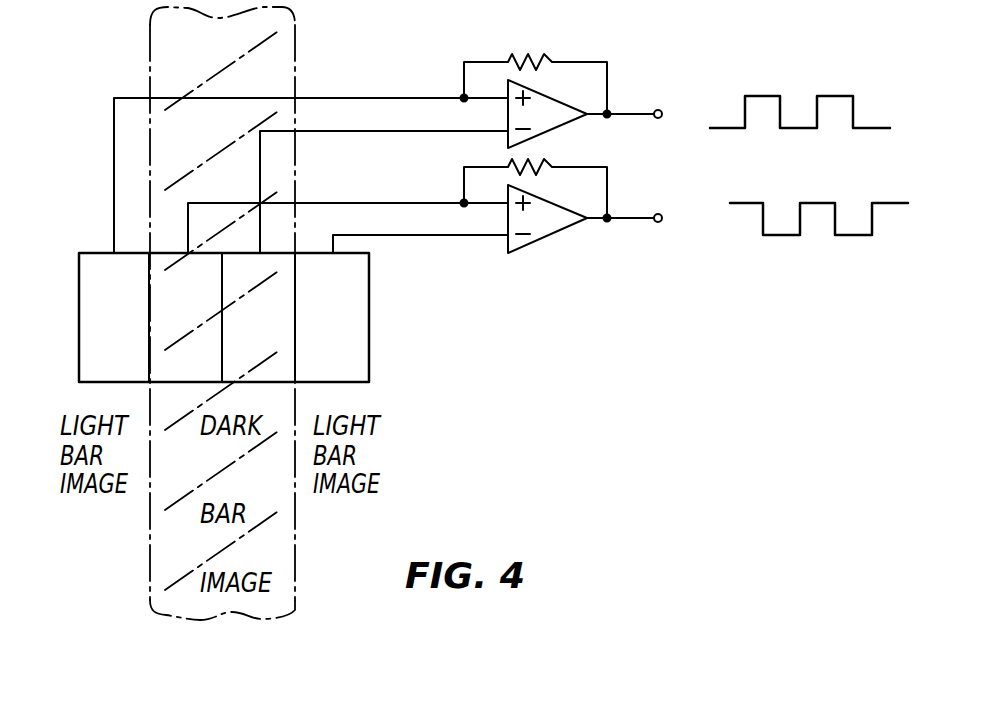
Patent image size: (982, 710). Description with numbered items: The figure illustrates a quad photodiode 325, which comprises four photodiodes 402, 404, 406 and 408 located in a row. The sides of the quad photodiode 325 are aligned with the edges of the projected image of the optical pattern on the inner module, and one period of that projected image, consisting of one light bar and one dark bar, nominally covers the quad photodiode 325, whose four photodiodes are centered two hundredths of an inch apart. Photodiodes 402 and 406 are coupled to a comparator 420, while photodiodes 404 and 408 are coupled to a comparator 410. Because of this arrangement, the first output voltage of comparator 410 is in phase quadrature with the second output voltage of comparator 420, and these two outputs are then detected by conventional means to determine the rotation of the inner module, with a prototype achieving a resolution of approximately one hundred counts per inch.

The quad photodiode 325 is at (78, 278).
The photodiode 402 is at (136, 334).
The photodiode 404 is at (207, 309).
The photodiode 406 is at (282, 337).
The photodiode 408 is at (359, 319).
The comparator 410 is at (548, 135).
The comparator 420 is at (547, 238).